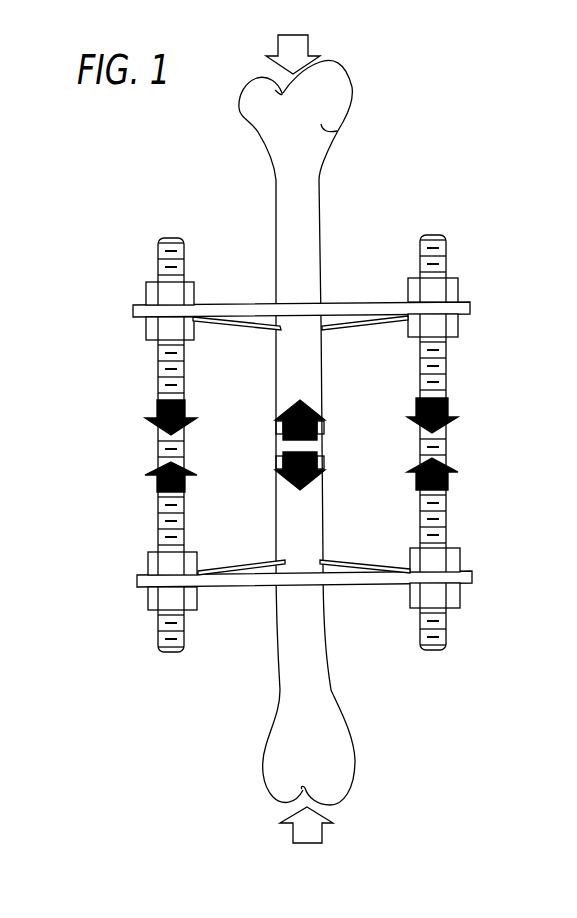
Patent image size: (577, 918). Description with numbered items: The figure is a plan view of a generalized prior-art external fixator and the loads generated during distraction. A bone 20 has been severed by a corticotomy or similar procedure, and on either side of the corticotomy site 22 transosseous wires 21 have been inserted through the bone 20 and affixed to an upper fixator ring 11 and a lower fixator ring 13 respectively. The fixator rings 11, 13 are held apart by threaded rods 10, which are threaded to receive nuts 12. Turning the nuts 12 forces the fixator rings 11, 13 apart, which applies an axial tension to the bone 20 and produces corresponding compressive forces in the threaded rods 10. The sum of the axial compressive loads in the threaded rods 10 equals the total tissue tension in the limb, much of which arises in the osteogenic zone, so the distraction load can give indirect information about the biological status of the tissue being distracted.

The threaded rod 10 is at (158, 380).
The upper fixator ring 11 is at (258, 304).
The nut 12 is at (147, 328).
The lower fixator ring 13 is at (237, 588).
The bone 20 is at (322, 166).
The transosseous wire 21 is at (250, 330).
The corticotomy site 22 is at (322, 442).